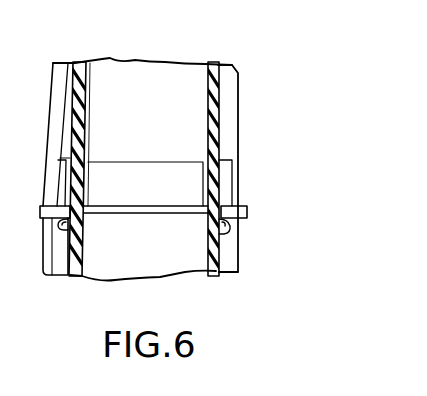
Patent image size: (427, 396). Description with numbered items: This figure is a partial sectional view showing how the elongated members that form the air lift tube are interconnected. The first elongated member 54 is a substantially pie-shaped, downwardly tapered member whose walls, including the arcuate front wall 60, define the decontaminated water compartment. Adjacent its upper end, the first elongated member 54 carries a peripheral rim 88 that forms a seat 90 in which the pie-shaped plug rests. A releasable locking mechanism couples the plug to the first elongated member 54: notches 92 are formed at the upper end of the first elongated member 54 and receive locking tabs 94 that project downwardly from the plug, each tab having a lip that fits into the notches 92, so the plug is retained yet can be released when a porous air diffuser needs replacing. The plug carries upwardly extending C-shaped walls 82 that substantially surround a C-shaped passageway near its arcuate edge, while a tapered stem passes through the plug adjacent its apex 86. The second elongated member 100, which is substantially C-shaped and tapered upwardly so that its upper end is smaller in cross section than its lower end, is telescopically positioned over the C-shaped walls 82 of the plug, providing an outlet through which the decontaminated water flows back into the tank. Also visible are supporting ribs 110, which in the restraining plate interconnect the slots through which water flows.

The first elongated member 54 is at (226, 261).
The arcuate front wall 60 is at (173, 269).
The C-shaped walls 82 is at (234, 171).
The apex 86 is at (120, 211).
The peripheral rim 88 is at (41, 214).
The seat 90 is at (205, 212).
The notches 92 is at (248, 217).
The locking tabs 94 is at (228, 232).
The second elongated member 100 is at (225, 100).
The supporting ribs 110 is at (166, 66).